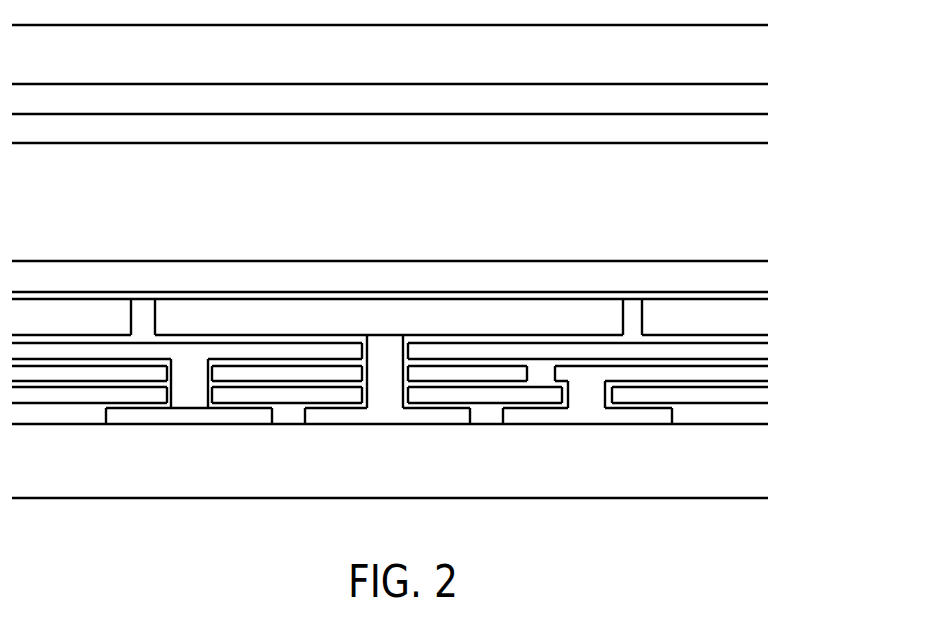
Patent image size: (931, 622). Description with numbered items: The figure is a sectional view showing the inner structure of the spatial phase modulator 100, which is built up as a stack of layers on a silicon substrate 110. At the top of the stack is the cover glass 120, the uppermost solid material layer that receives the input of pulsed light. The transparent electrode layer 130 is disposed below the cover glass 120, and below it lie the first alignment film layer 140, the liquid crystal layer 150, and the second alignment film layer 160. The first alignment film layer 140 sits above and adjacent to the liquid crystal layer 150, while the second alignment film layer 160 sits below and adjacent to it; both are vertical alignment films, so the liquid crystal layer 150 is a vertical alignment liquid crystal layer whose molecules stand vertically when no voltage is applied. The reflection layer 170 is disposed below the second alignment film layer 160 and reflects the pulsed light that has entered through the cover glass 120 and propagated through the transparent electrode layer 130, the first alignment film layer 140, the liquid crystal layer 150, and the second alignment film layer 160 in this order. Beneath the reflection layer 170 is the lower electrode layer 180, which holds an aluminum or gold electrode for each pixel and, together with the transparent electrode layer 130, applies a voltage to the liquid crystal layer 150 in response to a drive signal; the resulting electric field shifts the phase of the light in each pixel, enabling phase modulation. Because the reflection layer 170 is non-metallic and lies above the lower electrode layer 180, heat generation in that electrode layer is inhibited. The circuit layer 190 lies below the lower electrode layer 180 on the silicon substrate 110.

The spatial phase modulator 100 is at (862, 19).
The silicon substrate 110 is at (760, 467).
The cover glass 120 is at (762, 60).
The transparent electrode layer 130 is at (762, 98).
The first alignment film layer 140 is at (762, 131).
The liquid crystal layer 150 is at (762, 200).
The second alignment film layer 160 is at (762, 275).
The reflection layer 170 is at (762, 296).
The lower electrode layer 180 is at (762, 318).
The circuit layer 190 is at (780, 425).